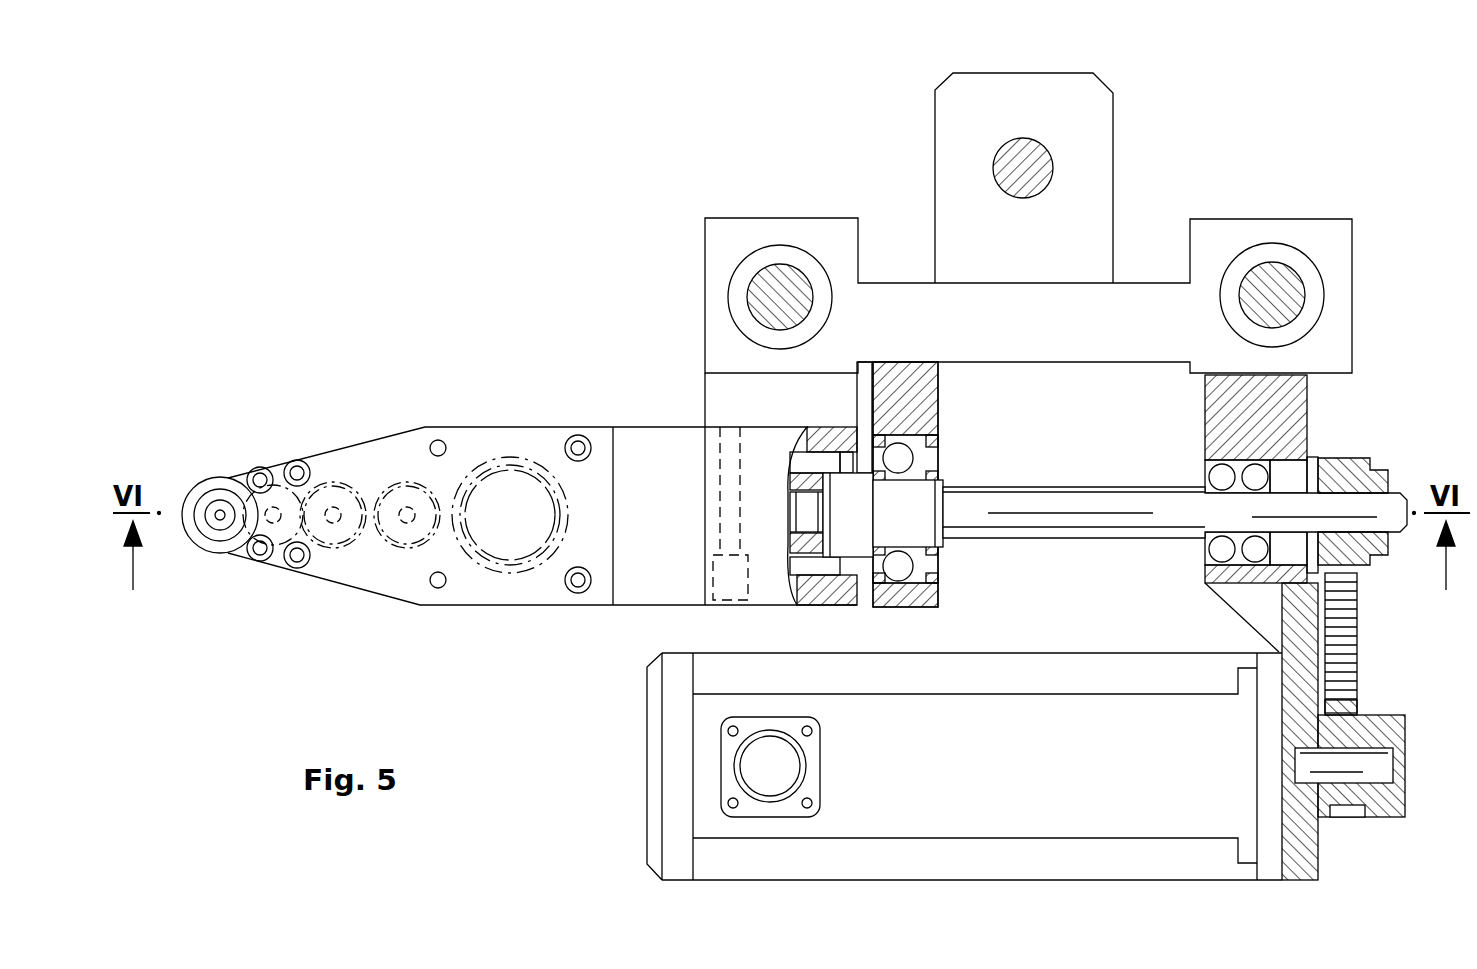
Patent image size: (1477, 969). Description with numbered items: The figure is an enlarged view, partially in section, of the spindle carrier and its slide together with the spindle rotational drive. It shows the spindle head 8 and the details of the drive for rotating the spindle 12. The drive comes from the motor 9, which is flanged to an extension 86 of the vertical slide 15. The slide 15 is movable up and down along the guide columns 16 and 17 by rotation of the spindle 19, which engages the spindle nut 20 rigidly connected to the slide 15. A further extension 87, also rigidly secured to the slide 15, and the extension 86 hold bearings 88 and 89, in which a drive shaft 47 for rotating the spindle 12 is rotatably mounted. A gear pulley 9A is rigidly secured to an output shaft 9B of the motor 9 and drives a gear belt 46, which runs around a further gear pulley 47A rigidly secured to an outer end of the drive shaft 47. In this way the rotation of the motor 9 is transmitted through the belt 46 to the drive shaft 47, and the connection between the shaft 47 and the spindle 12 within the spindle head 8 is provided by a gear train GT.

The spindle head 8 is at (437, 432).
The motor 9 is at (673, 803).
The gear pulley 9A is at (1362, 800).
The output shaft 9B is at (1372, 765).
The spindle 12 is at (216, 500).
The vertical slide 15 is at (1330, 330).
The guide column 16 is at (762, 300).
The guide column 17 is at (1283, 283).
The spindle 19 is at (1008, 160).
The spindle nut 20 is at (1098, 220).
The gear belt 46 is at (1345, 656).
The drive shaft 47 is at (1162, 490).
The gear pulley 47A is at (1370, 465).
The extension 86 is at (1343, 375).
The extension 87 is at (922, 394).
The bearing 88 is at (908, 568).
The bearing 89 is at (1222, 555).
The gear train GT is at (360, 470).